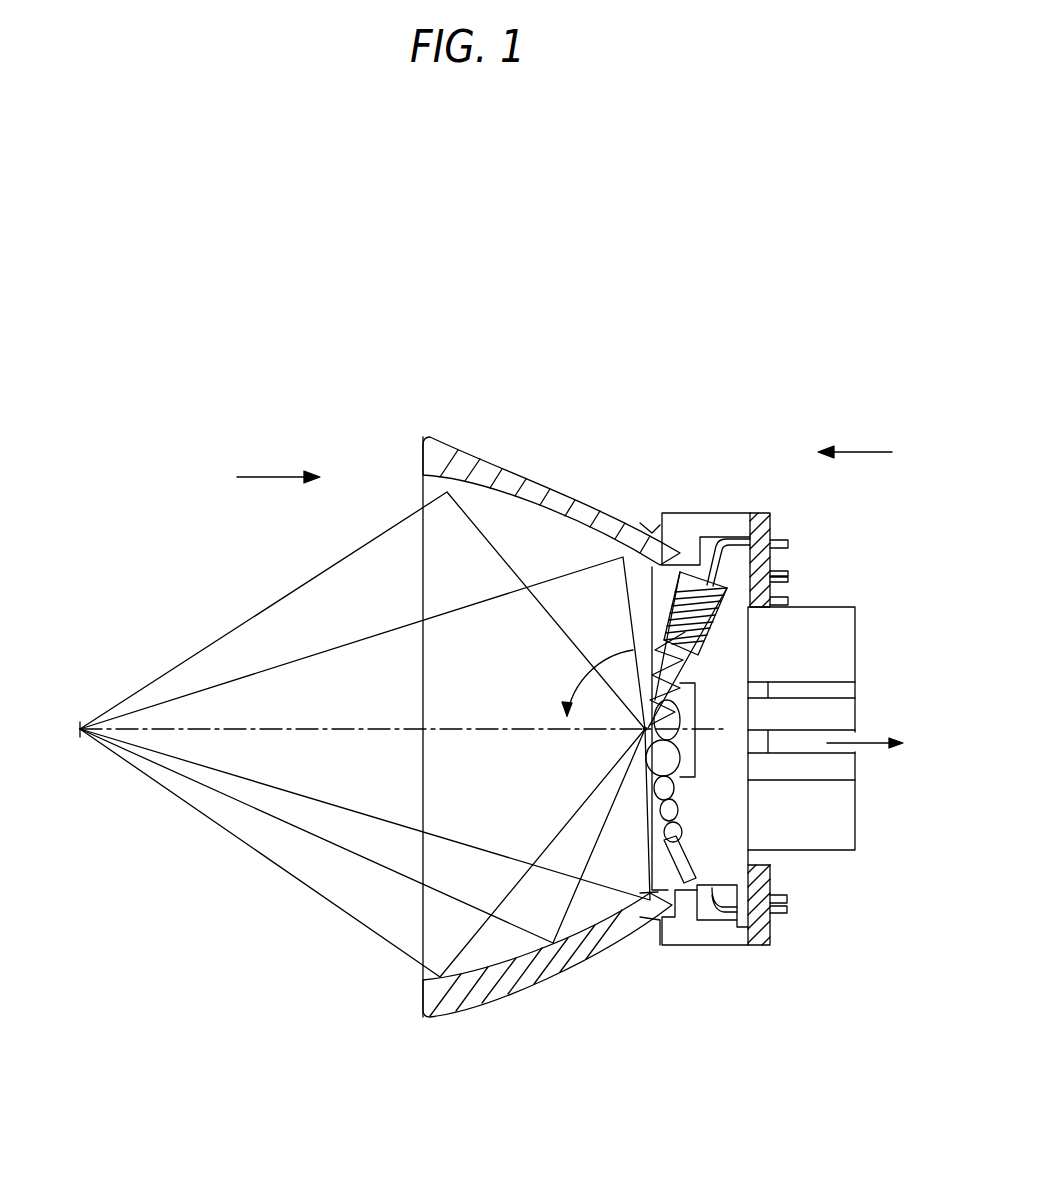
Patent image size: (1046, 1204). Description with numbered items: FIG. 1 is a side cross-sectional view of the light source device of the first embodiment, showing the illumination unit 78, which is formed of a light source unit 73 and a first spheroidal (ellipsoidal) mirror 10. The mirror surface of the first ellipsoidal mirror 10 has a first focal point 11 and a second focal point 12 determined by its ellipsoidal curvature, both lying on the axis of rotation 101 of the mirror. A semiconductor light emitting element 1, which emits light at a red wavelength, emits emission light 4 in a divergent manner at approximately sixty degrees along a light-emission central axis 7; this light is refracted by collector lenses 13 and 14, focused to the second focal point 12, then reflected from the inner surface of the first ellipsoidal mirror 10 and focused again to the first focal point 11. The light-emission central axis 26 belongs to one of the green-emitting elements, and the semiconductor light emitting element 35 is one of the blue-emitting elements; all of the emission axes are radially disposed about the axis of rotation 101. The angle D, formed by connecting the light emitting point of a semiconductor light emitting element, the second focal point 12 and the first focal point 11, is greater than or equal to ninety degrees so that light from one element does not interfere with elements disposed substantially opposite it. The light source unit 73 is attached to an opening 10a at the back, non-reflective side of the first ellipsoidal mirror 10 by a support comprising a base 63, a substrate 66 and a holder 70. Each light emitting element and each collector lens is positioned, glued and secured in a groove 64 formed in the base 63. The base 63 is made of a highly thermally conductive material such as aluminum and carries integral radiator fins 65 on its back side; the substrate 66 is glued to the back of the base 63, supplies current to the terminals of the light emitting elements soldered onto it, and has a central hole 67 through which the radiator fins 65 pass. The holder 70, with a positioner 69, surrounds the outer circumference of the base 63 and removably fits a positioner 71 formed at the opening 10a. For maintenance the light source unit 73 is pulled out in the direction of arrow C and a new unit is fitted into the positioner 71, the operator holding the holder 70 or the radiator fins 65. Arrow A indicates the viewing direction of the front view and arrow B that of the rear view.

The semiconductor light emitting element 1 is at (668, 594).
The emission light 4 is at (308, 870).
The light-emission central axis 7 is at (383, 870).
The first spheroidal mirror 10 is at (612, 483).
The opening 10a is at (657, 873).
The first focal point 11 is at (82, 734).
The second focal point 12 is at (643, 732).
The collector lens 13 is at (640, 643).
The collector lens 14 is at (645, 687).
The light-emission central axis 26 is at (233, 647).
The semiconductor light emitting element 35 is at (688, 890).
The base 63 is at (737, 812).
The groove 64 is at (643, 548).
The radiator fins 65 is at (833, 607).
The substrate 66 is at (763, 927).
The hole 67 is at (757, 863).
The positioner 69 is at (683, 877).
The holder 70 is at (723, 940).
The positioner 71 is at (665, 905).
The light source unit 73 is at (857, 497).
The illumination unit 78 is at (780, 440).
The axis of rotation 101 is at (393, 732).
The arrow A is at (266, 477).
The arrow B is at (868, 451).
The arrow C is at (839, 741).
The angle D is at (597, 671).